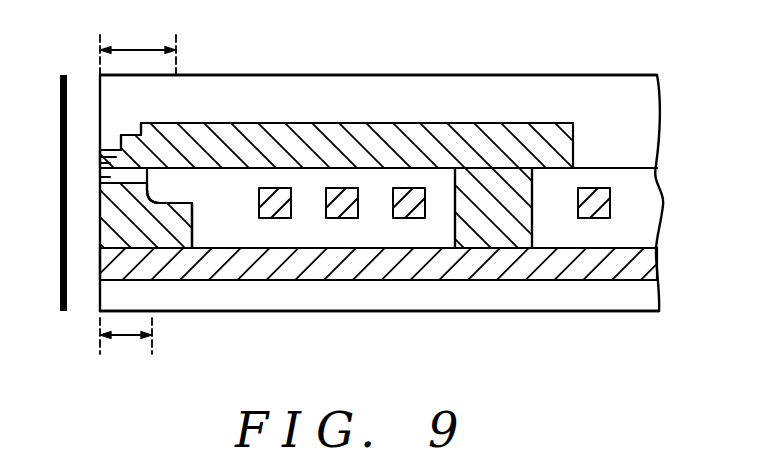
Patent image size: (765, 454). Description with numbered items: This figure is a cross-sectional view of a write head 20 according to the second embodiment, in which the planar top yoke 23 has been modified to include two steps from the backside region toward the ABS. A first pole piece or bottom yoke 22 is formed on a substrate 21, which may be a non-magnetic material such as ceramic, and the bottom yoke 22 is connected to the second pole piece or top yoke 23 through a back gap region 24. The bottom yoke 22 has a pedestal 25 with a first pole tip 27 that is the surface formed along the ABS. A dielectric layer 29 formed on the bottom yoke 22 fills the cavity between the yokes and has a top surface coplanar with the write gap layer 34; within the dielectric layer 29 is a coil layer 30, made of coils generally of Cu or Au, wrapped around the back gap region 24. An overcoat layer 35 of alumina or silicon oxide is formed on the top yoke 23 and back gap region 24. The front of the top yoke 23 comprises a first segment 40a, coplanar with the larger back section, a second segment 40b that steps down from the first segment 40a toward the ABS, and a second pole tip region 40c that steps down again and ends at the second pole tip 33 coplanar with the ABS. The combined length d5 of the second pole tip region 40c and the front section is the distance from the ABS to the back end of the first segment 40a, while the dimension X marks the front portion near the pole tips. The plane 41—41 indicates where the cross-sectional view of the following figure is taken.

The write head 20 is at (665, 81).
The substrate 21 is at (643, 294).
The bottom yoke 22 is at (454, 262).
The top yoke 23 is at (424, 140).
The back gap region 24 is at (505, 230).
The pedestal 25 is at (177, 235).
The first pole tip 27 is at (100, 227).
The dielectric layer 29 is at (233, 223).
The coil layer 30 is at (275, 205).
The second pole tip 33 is at (112, 158).
The write gap layer 34 is at (110, 178).
The overcoat layer 35 is at (637, 116).
The first segment 40a is at (143, 130).
The second segment 40b is at (100, 148).
The second pole tip region 40c is at (110, 157).
The plane 41— 41 is at (66, 77).
The air bearing surface ABS is at (100, 40).
The combined length d5 is at (138, 43).
The distance X is at (126, 344).